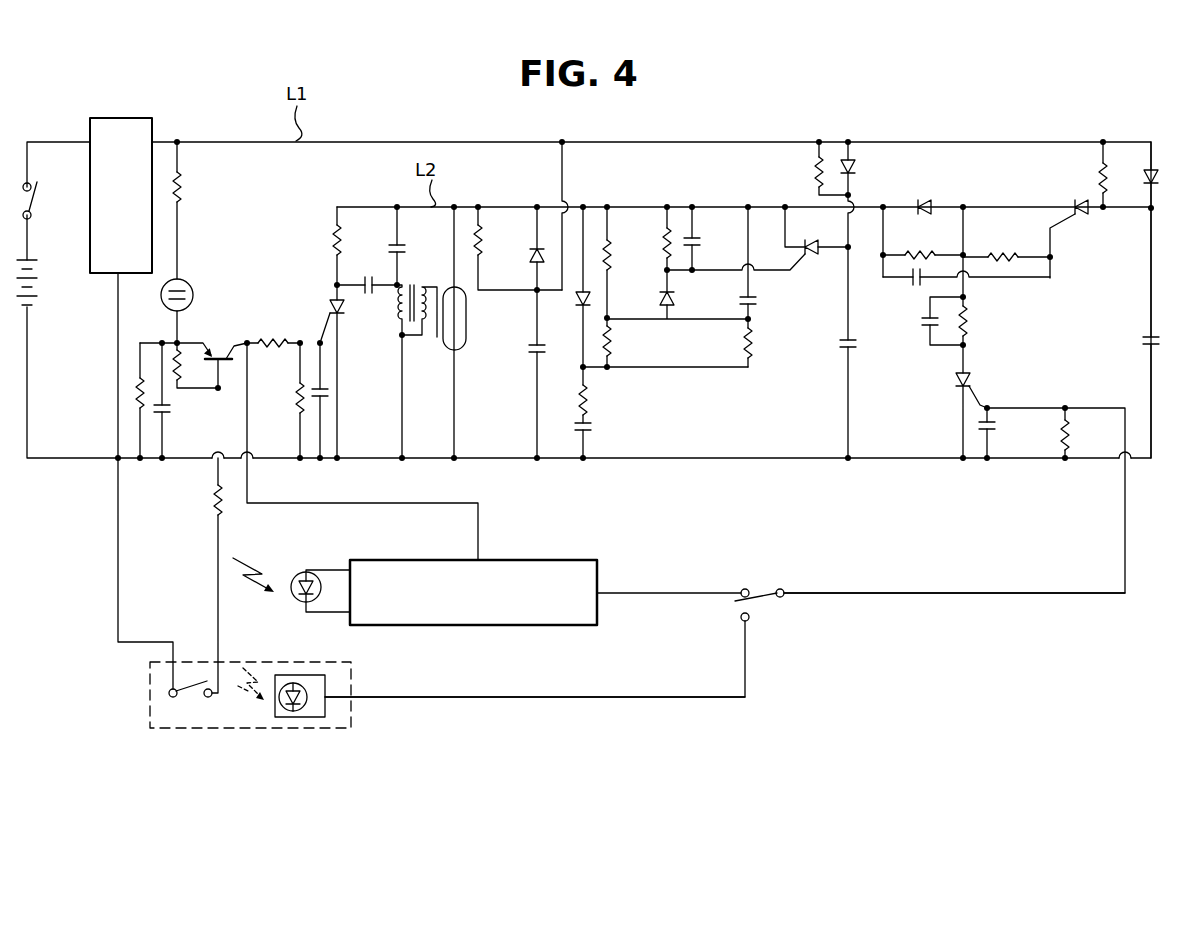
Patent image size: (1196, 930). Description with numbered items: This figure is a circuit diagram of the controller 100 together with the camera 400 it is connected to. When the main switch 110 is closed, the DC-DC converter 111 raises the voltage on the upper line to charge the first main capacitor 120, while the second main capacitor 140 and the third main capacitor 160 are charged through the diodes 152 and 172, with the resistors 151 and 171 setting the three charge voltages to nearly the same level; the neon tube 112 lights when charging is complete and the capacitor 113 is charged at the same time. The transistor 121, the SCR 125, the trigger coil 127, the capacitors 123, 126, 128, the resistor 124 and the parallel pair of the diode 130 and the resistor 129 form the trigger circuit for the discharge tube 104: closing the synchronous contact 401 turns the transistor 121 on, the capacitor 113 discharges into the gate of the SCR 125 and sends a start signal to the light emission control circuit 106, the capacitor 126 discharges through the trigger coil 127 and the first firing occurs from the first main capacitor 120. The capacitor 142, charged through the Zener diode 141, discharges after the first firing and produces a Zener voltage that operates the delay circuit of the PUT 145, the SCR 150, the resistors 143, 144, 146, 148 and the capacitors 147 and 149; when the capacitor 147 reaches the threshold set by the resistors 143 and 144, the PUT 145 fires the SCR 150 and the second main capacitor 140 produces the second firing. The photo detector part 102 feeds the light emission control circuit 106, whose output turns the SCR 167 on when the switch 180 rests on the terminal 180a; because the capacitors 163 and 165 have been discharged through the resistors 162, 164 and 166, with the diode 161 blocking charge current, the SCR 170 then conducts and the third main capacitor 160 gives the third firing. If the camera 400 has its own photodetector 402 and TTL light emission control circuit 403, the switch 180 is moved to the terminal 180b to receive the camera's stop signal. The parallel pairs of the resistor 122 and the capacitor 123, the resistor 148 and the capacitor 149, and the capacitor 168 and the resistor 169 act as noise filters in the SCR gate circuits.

The controller 100 is at (880, 108).
The photo detector part 102 is at (302, 570).
The discharge tube 104 is at (462, 352).
The light emission control circuit 106 is at (550, 560).
The main switch 110 is at (40, 196).
The DC-DC converter 111 is at (105, 275).
The neon tube 112 is at (190, 286).
The capacitor 113 is at (172, 409).
The first main capacitor 120 is at (522, 347).
The transistor 121 is at (215, 346).
The resistor 122 is at (295, 402).
The capacitor 123 is at (330, 392).
The resistor 124 is at (332, 241).
The SCR 125 is at (328, 310).
The capacitor 126 is at (370, 296).
The trigger coil 127 is at (414, 338).
The capacitor 128 is at (388, 249).
The resistor 129 is at (484, 250).
The diode 130 is at (530, 262).
The second main capacitor 140 is at (860, 345).
The Zener diode 141 is at (577, 316).
The capacitor 142 is at (592, 428).
The resistor 143 is at (612, 340).
The resistor 144 is at (612, 258).
The PUT 145 is at (675, 300).
The resistor 146 is at (758, 343).
The capacitor 147 is at (758, 300).
The resistor 148 is at (664, 250).
The capacitor 149 is at (712, 240).
The SCR 150 is at (808, 258).
The resistor 151 is at (812, 172).
The diode 152 is at (858, 164).
The third main capacitor 160 is at (1141, 342).
The diode 161 is at (918, 202).
The resistor 162 is at (930, 258).
The capacitor 163 is at (913, 286).
The resistor 164 is at (1000, 257).
The capacitor 165 is at (922, 322).
The resistor 166 is at (970, 326).
The SCR 167 is at (975, 383).
The capacitor 168 is at (1000, 428).
The resistor 169 is at (1060, 438).
The SCR 170 is at (1082, 222).
The resistor 171 is at (1098, 172).
The diode 172 is at (1158, 182).
The switch 180 is at (725, 618).
The terminal 180a is at (745, 589).
The terminal 180b is at (697, 631).
The camera 400 is at (234, 730).
The synchronous contact 401 is at (192, 700).
The photodetector 402 is at (300, 712).
The TTL light emission control circuit 403 is at (327, 688).